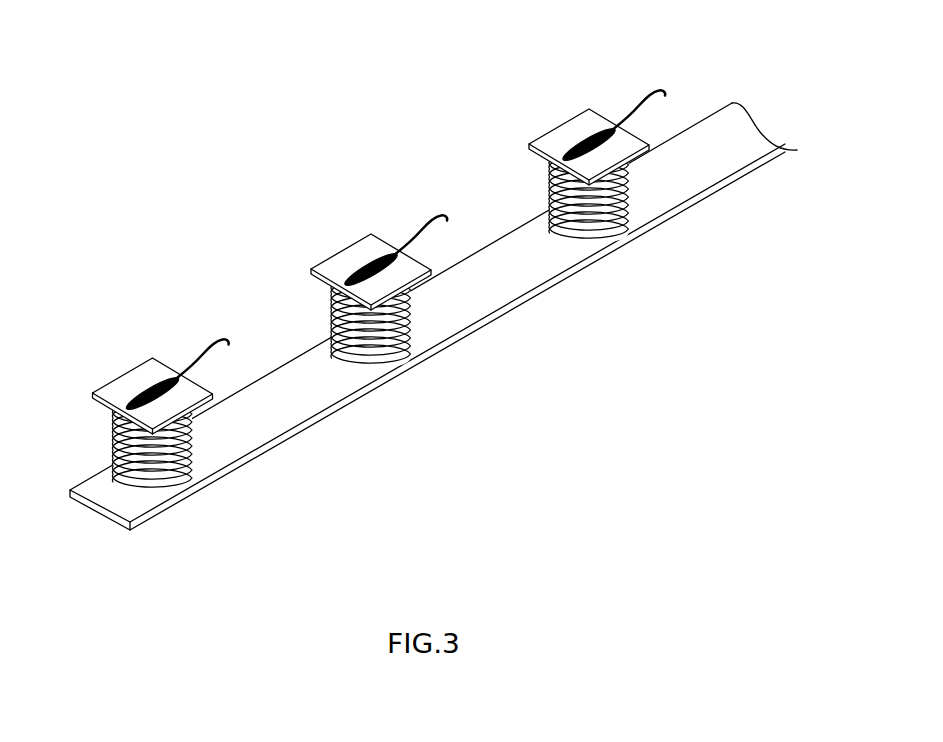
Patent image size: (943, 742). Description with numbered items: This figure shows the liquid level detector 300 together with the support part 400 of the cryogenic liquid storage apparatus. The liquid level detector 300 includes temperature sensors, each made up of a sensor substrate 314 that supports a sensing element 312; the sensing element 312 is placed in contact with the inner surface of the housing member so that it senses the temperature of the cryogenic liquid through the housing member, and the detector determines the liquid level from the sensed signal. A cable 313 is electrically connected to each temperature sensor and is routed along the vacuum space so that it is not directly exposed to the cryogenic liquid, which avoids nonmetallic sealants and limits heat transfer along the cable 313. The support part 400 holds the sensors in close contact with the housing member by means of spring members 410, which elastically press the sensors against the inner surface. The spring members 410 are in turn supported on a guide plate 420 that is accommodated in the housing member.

The liquid level detector 300 is at (356, 217).
The sensing element 312 is at (138, 384).
The cable 313 is at (203, 352).
The sensor substrate 314 is at (107, 389).
The support part 400 is at (422, 334).
The spring member 410 is at (180, 480).
The guide plate 420 is at (462, 340).